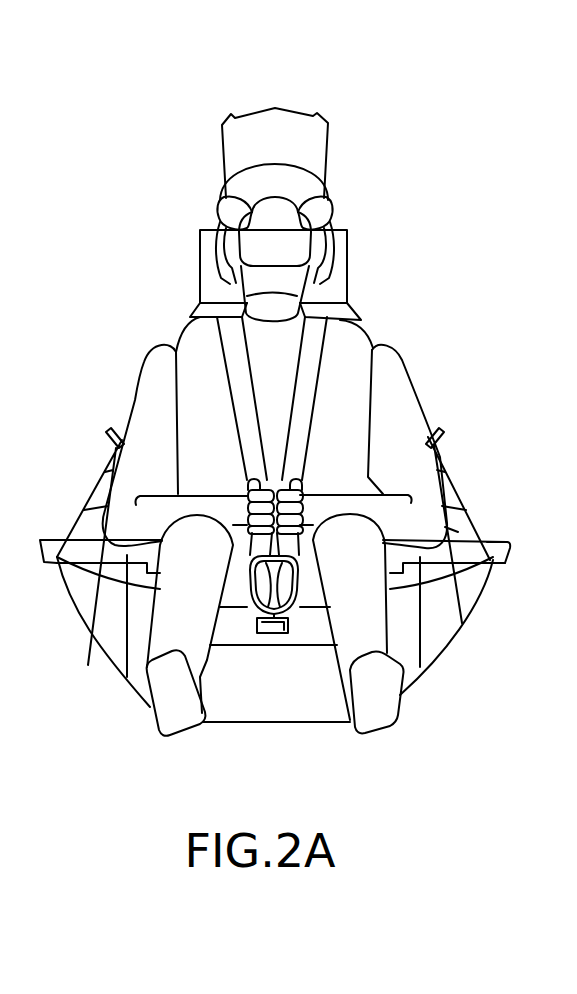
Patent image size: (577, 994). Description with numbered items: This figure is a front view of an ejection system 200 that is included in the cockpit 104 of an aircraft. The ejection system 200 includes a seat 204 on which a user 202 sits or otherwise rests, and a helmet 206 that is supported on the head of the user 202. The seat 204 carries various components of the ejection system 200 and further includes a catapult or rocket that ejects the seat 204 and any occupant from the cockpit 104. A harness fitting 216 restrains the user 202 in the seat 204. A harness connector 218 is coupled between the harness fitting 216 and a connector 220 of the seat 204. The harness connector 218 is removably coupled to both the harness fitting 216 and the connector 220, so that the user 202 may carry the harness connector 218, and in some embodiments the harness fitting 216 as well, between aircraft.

The cockpit 104 is at (248, 100).
The ejection system 200 is at (146, 275).
The user 202 is at (408, 353).
The seat 204 is at (227, 712).
The helmet 206 is at (294, 184).
The harness fitting 216 is at (317, 333).
The harness connector 218 is at (290, 622).
The connector 220 is at (268, 633).